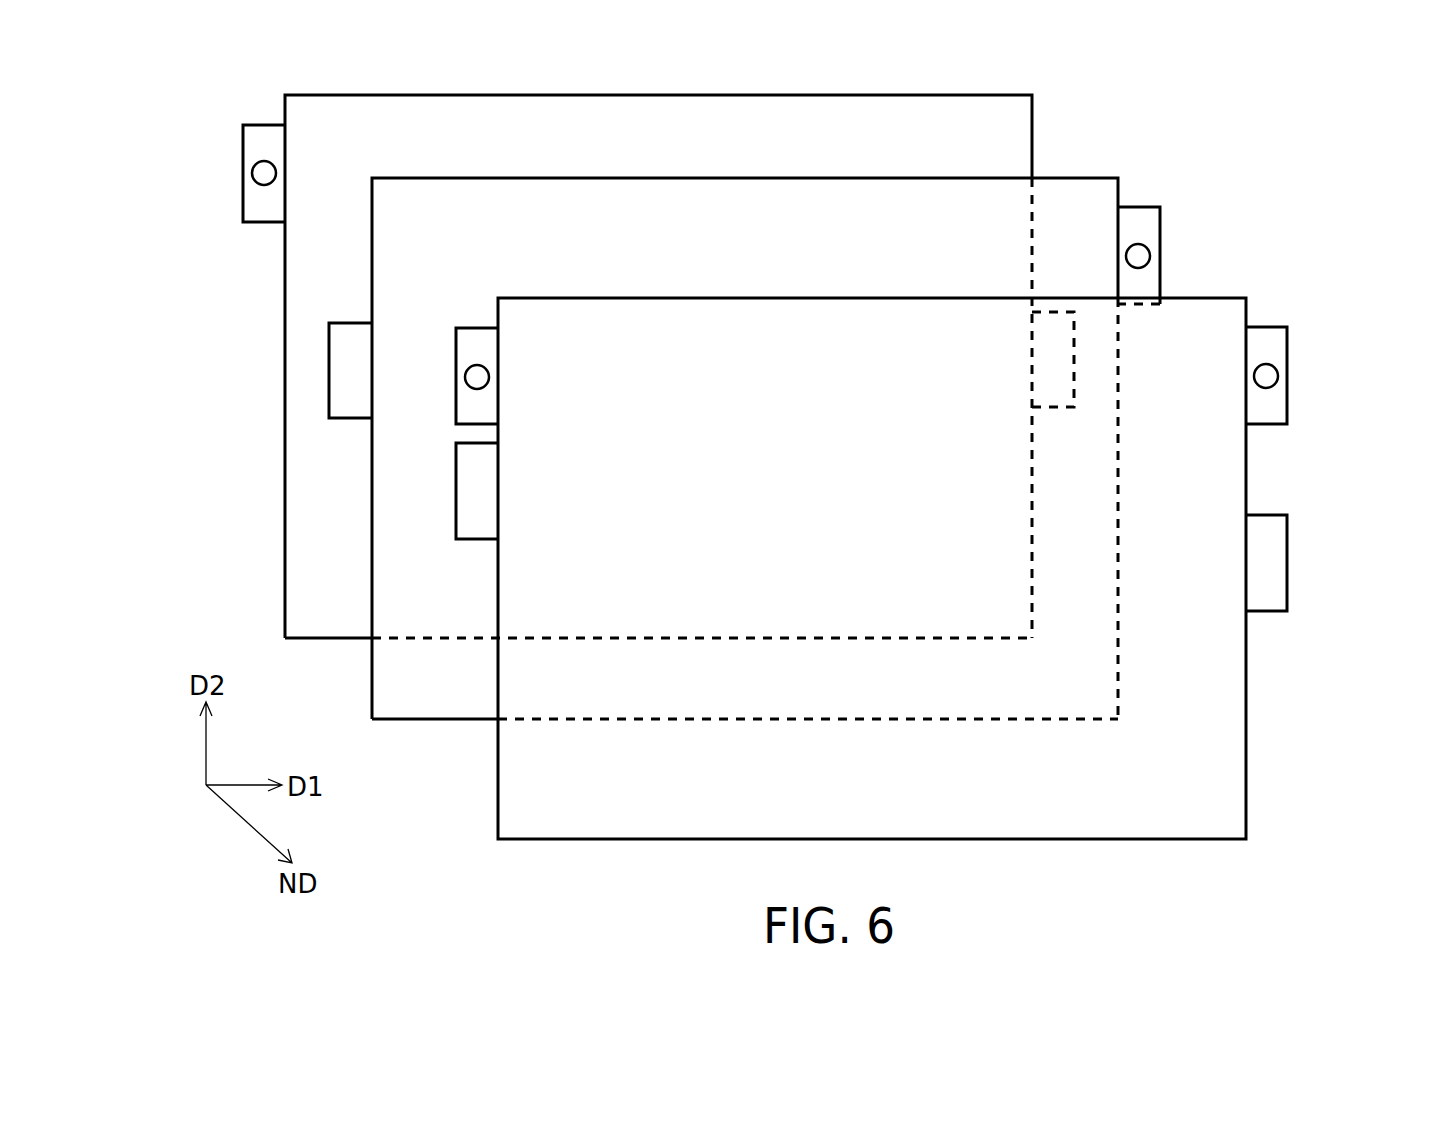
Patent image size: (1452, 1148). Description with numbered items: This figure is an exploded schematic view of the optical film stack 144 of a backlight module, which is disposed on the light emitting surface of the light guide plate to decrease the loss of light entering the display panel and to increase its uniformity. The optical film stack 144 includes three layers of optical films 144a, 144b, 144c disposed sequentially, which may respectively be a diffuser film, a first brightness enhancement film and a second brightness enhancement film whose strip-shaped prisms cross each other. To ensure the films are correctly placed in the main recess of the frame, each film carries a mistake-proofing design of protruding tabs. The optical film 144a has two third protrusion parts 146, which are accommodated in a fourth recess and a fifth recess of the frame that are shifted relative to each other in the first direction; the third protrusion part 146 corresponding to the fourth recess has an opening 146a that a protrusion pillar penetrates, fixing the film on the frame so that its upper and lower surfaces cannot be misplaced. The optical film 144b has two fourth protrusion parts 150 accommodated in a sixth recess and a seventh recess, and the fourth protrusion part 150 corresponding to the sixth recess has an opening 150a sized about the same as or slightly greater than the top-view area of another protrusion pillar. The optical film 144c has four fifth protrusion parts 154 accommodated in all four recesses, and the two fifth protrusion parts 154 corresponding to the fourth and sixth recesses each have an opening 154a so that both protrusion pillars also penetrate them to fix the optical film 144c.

The optical film stack 144 is at (1330, 163).
The optical film 144a is at (1012, 138).
The optical film 144b is at (1105, 192).
The optical film 144c is at (1200, 587).
The third protrusion part 146 is at (266, 133).
The opening 146a is at (244, 178).
The fourth protrusion part 150 is at (343, 368).
The opening 150a is at (1164, 262).
The fifth protrusion part 154 is at (470, 410).
The opening 154a is at (456, 383).